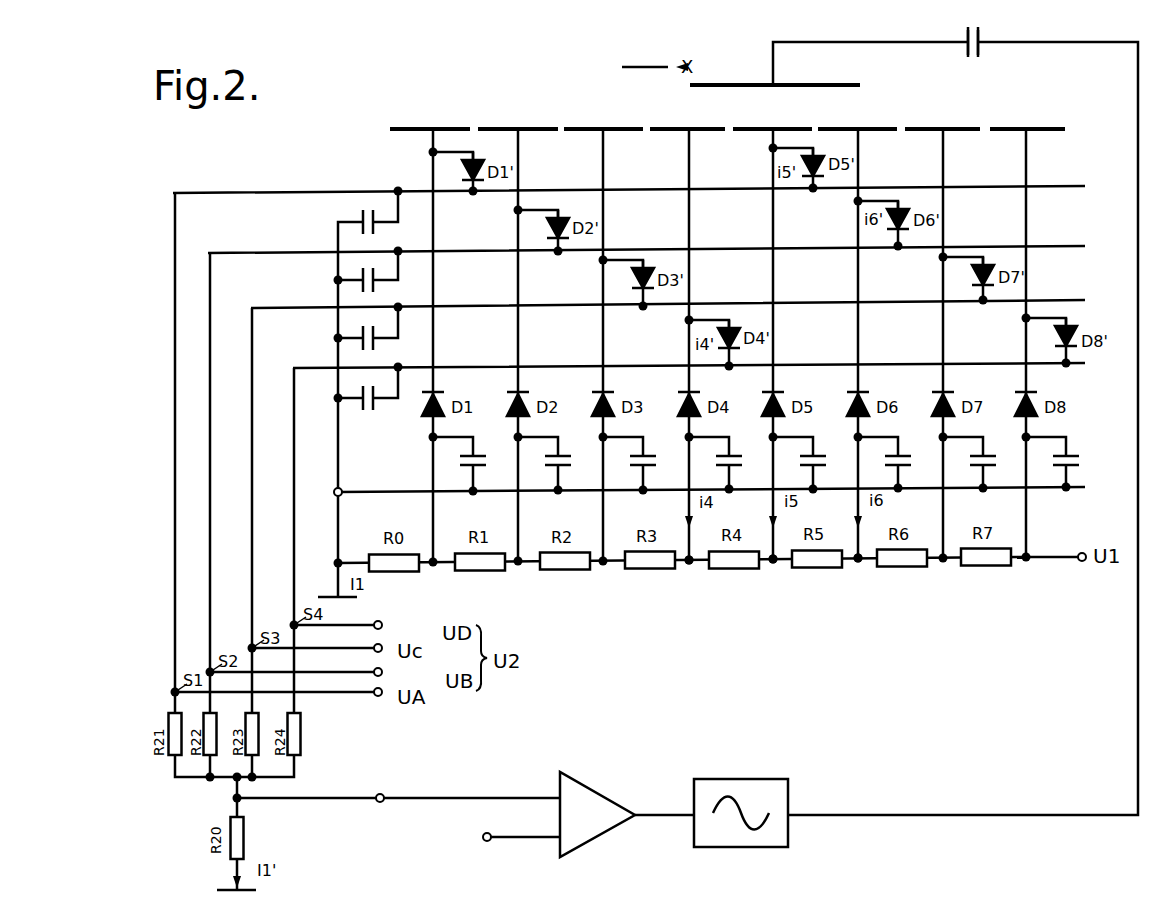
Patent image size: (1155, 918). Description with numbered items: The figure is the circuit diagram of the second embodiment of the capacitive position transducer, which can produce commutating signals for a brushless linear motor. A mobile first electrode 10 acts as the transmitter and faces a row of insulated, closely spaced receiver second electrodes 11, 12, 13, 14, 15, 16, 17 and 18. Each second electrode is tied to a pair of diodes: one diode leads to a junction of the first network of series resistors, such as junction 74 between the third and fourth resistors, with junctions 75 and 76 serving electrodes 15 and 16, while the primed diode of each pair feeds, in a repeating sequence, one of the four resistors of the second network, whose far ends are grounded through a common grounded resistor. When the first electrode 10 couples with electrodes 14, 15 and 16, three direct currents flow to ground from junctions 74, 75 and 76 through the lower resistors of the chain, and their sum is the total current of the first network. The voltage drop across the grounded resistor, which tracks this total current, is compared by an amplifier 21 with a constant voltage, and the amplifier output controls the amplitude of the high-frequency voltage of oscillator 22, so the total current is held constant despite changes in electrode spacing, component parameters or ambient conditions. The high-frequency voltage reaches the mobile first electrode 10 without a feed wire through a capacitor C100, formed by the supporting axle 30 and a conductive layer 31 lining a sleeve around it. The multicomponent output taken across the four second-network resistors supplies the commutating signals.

The first electrode 10 is at (775, 72).
The second electrode 11 is at (430, 332).
The second electrode 12 is at (518, 332).
The second electrode 13 is at (603, 332).
The second electrode 14 is at (687, 331).
The second electrode 15 is at (772, 330).
The second electrode 16 is at (857, 330).
The second electrode 17 is at (942, 330).
The second electrode 18 is at (1033, 585).
The amplifier 21 is at (585, 800).
The oscillator 22 is at (742, 786).
The supporting axle 30 is at (985, 48).
The conductive layer 31 is at (962, 48).
The capacitor C100 is at (973, 29).
The junction 74 is at (689, 566).
The junction 75 is at (773, 565).
The junction 76 is at (858, 564).